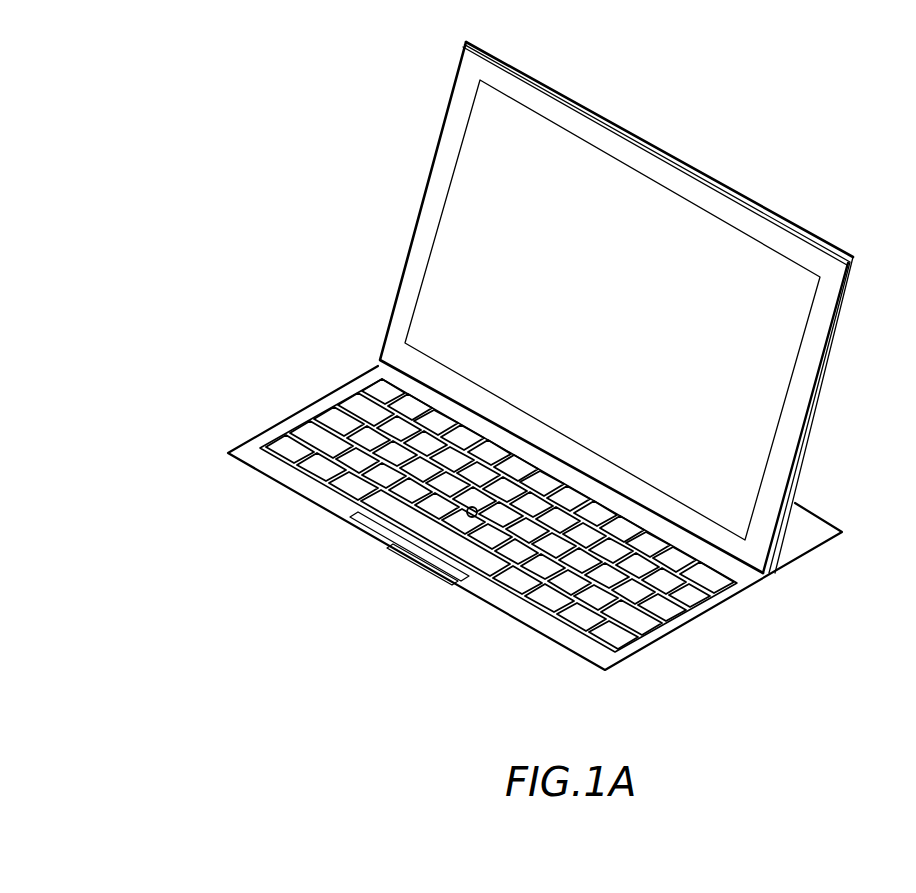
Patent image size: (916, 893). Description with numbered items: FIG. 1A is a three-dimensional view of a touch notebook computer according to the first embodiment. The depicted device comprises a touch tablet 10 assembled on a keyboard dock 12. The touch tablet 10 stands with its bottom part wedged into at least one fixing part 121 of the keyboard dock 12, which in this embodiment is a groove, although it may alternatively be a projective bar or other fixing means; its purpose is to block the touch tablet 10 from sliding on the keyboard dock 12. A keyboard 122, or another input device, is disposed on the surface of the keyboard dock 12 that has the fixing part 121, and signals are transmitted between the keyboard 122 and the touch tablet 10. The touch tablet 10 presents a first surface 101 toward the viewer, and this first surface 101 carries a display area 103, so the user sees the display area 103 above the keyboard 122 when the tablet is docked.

The touch tablet 10 is at (583, 307).
The first surface 101 is at (424, 225).
The display area 103 is at (479, 145).
The keyboard dock 12 is at (499, 538).
The fixing part 121 is at (773, 575).
The keyboard 122 is at (480, 585).